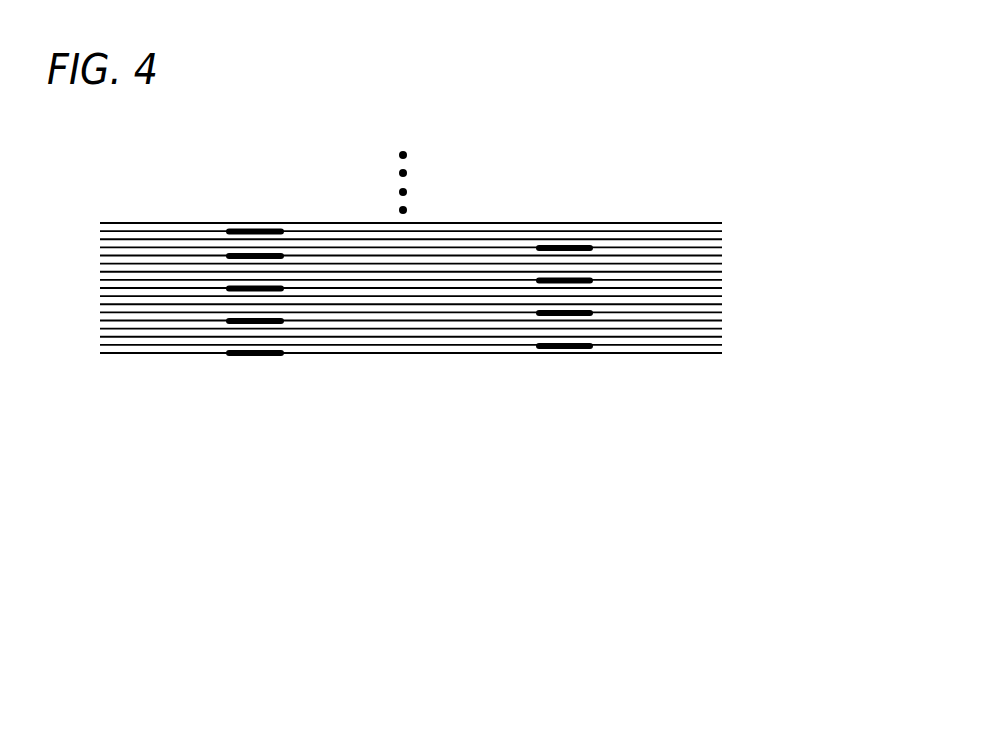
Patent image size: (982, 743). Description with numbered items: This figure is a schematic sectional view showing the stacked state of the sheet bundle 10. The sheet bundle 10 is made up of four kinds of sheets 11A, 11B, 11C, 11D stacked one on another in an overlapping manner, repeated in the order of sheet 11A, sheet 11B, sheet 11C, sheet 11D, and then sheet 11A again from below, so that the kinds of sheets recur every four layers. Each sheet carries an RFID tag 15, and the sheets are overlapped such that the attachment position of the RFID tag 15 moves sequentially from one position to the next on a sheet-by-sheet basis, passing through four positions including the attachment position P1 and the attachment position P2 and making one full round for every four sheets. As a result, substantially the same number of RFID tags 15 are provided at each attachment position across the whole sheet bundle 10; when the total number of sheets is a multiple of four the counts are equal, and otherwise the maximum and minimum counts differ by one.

The sheet bundle 10 is at (456, 383).
The sheet 11A is at (720, 298).
The sheet 11B is at (711, 319).
The sheet 11C is at (721, 312).
The sheet 11D is at (721, 304).
The RFID tag 15 is at (252, 356).
The attachment position P1 is at (253, 220).
The attachment position P2 is at (558, 220).